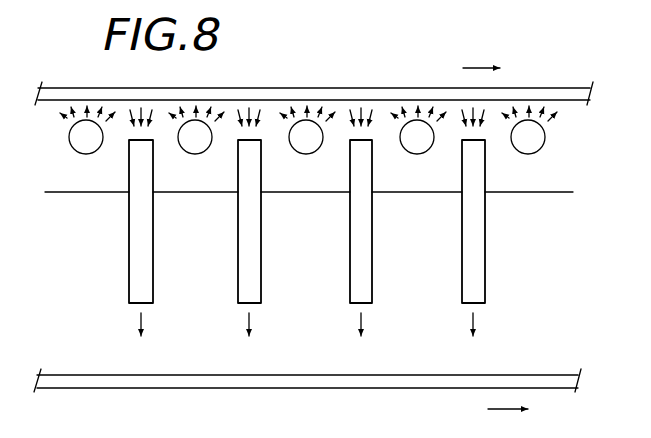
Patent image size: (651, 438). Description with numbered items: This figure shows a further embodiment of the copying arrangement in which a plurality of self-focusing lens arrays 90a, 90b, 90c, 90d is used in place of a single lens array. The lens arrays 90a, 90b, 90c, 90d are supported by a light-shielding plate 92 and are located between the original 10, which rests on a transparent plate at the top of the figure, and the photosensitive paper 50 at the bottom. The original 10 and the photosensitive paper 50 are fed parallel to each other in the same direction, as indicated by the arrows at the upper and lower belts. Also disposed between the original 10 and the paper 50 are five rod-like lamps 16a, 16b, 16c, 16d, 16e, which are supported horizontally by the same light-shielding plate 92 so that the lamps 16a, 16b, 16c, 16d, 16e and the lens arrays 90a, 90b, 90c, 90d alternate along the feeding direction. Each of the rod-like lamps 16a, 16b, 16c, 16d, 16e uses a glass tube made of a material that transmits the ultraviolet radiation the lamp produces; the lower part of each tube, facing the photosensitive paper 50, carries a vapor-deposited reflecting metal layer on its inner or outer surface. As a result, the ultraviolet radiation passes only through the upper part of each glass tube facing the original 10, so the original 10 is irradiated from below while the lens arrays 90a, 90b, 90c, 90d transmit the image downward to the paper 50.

The original 10 is at (381, 95).
The photosensitive paper 50 is at (543, 382).
The light-shielding plate 92 is at (80, 193).
The rod-like lamp 16a is at (80, 144).
The rod-like lamp 16b is at (189, 144).
The rod-like lamp 16c is at (300, 144).
The rod-like lamp 16d is at (411, 144).
The rod-like lamp 16e is at (531, 142).
The self-focusing lens array 90a is at (153, 273).
The self-focusing lens array 90b is at (261, 273).
The self-focusing lens array 90c is at (372, 273).
The self-focusing lens array 90d is at (485, 273).